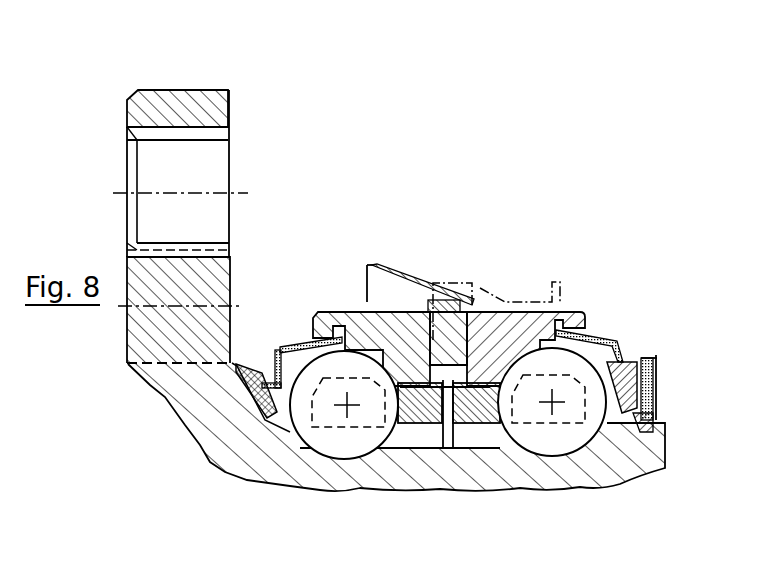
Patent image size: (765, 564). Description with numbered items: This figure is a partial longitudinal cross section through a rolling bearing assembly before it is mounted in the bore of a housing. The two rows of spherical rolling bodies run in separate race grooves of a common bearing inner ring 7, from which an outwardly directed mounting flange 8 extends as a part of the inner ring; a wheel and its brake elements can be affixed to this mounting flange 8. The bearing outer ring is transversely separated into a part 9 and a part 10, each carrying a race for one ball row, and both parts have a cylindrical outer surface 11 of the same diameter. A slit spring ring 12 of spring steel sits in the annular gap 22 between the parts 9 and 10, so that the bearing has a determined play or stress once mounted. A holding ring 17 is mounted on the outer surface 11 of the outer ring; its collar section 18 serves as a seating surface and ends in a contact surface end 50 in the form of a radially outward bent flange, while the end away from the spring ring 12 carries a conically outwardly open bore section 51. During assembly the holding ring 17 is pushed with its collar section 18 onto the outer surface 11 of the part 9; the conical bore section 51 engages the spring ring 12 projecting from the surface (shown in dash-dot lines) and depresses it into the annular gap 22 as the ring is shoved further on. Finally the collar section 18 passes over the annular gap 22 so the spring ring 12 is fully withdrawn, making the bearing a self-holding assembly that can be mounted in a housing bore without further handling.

The bearing inner ring 7 is at (263, 452).
The mounting flange 8 is at (155, 108).
The bearing outer ring part 9 is at (577, 308).
The bearing outer ring part 10 is at (347, 312).
The cylindrical outer surface 11 is at (520, 307).
The slit spring ring 12 is at (492, 414).
The holding ring 17 is at (388, 305).
The collar section 18 is at (450, 306).
The annular gap 22 is at (448, 380).
The contact surface end 50 is at (472, 283).
The conical bore section 51 is at (388, 303).